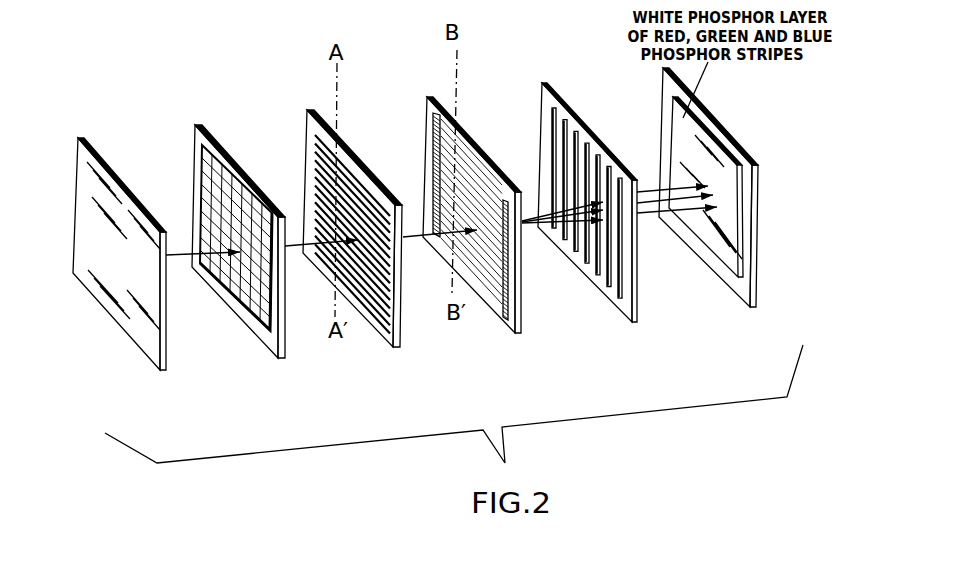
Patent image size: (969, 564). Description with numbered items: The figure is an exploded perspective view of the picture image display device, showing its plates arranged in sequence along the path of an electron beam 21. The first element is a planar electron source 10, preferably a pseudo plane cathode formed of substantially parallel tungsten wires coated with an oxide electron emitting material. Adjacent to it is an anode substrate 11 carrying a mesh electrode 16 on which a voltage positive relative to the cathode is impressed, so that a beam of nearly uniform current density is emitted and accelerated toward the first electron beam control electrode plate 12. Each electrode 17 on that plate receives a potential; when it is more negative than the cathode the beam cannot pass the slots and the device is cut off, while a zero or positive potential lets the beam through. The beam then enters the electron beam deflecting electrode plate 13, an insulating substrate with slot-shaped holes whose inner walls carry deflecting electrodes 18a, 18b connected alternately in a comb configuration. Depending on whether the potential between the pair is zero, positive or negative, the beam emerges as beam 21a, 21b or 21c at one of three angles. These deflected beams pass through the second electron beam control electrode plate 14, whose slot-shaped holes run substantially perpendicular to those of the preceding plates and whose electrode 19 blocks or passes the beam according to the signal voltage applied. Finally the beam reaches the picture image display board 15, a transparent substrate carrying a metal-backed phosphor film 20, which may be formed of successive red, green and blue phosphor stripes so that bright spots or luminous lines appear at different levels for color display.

The planar electron source 10 is at (152, 355).
The anode substrate 11 is at (273, 345).
The first electron beam control electrode plate 12 is at (388, 330).
The electron beam deflecting electrode plate 13 is at (508, 330).
The second electron beam control electrode plate 14 is at (620, 305).
The picture image display board 15 is at (738, 287).
The mesh electrode 16 is at (220, 180).
The electrode 17 is at (315, 112).
The deflecting electrode 18a is at (433, 133).
The deflecting electrode 18b is at (508, 292).
The electrode 19 is at (552, 125).
The phosphor film 20 is at (680, 120).
The electron beam 21 is at (185, 248).
The electron beam 21a is at (648, 188).
The electron beam 21b is at (658, 188).
The electron beam 21c is at (655, 215).